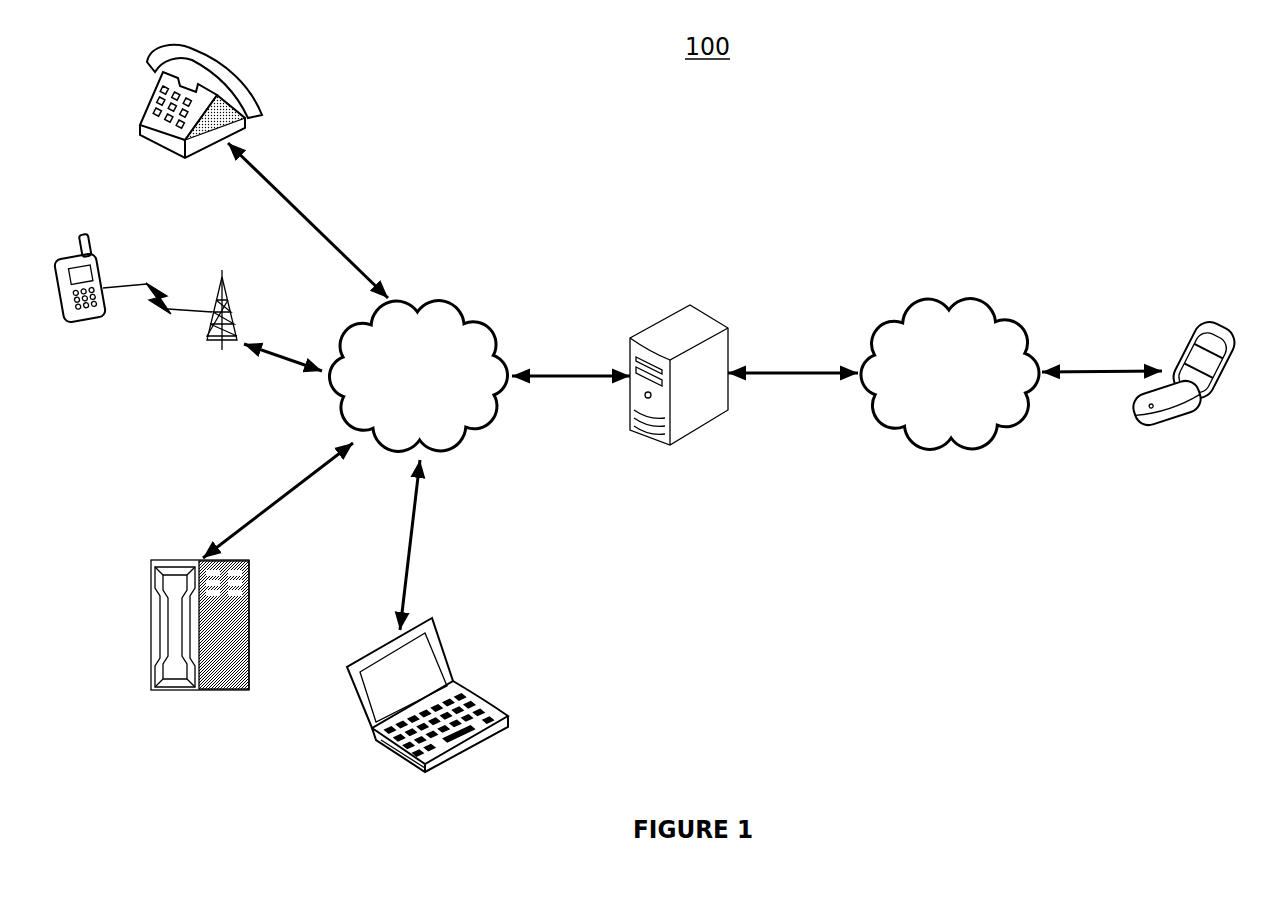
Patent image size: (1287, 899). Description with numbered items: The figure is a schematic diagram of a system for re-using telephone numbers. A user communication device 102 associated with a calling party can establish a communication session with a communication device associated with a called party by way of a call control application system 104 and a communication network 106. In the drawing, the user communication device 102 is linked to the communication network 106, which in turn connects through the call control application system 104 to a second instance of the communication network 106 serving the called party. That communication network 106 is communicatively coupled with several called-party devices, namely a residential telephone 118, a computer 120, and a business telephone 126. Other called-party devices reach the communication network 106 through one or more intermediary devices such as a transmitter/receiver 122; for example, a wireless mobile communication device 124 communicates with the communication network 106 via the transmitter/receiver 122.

The user communication device 102 is at (1192, 412).
The call control application system 104 is at (713, 418).
The communication network 106 is at (490, 437).
The residential telephone 118 is at (257, 92).
The computer 120 is at (422, 772).
The transmitter/receiver 122 is at (235, 297).
The wireless mobile communication device 124 is at (80, 322).
The business telephone 126 is at (151, 577).